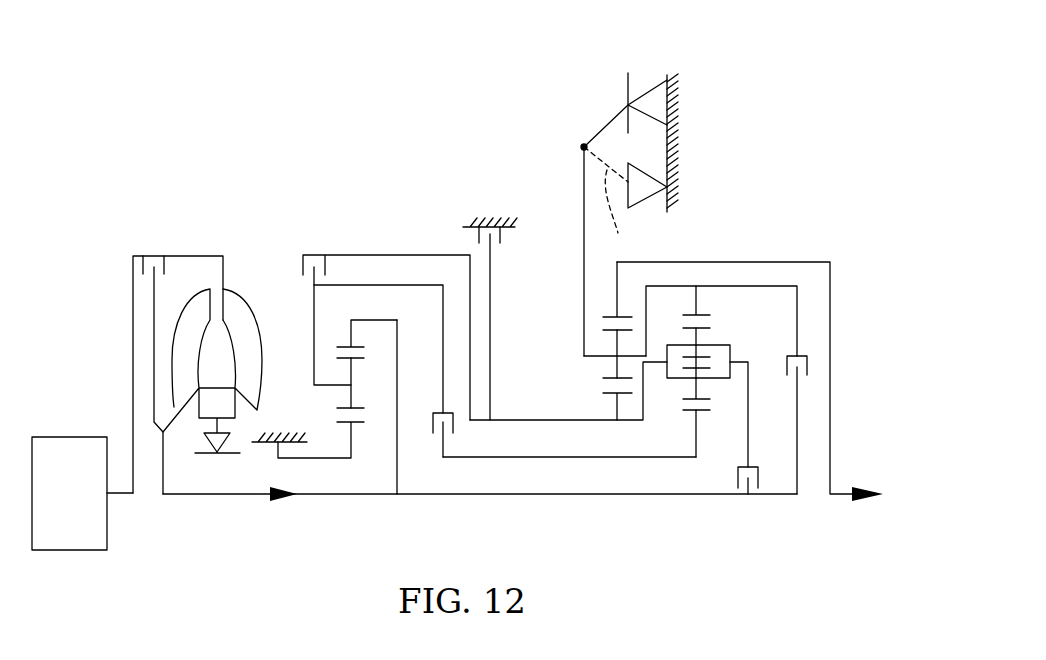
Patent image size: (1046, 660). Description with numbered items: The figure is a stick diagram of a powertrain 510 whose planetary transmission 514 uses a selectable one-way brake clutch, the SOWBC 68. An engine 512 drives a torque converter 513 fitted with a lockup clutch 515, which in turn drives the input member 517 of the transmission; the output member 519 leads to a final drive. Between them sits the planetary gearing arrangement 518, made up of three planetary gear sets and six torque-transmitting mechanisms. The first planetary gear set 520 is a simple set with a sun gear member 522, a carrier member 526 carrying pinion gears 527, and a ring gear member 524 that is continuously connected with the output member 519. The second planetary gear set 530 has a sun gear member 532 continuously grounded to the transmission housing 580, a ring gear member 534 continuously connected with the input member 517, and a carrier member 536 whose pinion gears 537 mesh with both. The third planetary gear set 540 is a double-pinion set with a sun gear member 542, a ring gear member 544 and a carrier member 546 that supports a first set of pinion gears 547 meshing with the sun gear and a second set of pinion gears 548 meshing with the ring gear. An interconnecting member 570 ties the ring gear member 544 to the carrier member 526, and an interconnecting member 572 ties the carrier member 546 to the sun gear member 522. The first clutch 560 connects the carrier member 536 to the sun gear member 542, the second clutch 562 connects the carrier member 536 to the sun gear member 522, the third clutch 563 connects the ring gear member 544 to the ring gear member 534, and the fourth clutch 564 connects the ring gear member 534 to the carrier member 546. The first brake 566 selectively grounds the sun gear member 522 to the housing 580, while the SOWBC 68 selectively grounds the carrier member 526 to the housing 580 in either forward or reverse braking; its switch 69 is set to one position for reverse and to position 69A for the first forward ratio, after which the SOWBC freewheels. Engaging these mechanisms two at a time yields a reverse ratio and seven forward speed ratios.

The selectable one-way brake clutch (SOWBC) 68 is at (585, 70).
The switch 69 is at (606, 126).
The switch position 69A is at (621, 213).
The transmission housing 580 is at (672, 73).
The powertrain 510 is at (707, 103).
The planetary transmission 514 is at (713, 173).
The planetary gearing arrangement 518 is at (382, 202).
The first brake 566 is at (503, 258).
The second clutch 562 is at (295, 290).
The lockup clutch 515 is at (147, 285).
The engine 512 is at (53, 507).
The torque converter 513 is at (155, 447).
The input member 517 is at (232, 498).
The ring gear member 534 is at (357, 346).
The carrier member 536 is at (332, 385).
The pinion gears 537 is at (351, 373).
The sun gear member 532 is at (345, 428).
The second planetary gear set 530 is at (362, 444).
The first clutch 560 is at (433, 445).
The ring gear member 524 is at (613, 314).
The pinion gears 527 is at (614, 340).
The carrier member 526 is at (600, 357).
The first planetary gear set 520 is at (577, 387).
The sun gear member 522 is at (611, 396).
The interconnecting member 572 is at (633, 423).
The interconnecting member 570 is at (644, 304).
The ring gear member 544 is at (705, 315).
The second set of pinion gears 548 is at (694, 337).
The carrier member 546 is at (731, 354).
The first set of pinion gears 547 is at (694, 390).
The sun gear member 542 is at (691, 412).
The third planetary gear set 540 is at (707, 427).
The fourth clutch 564 is at (760, 498).
The third clutch 563 is at (803, 383).
The output member 519 is at (842, 497).